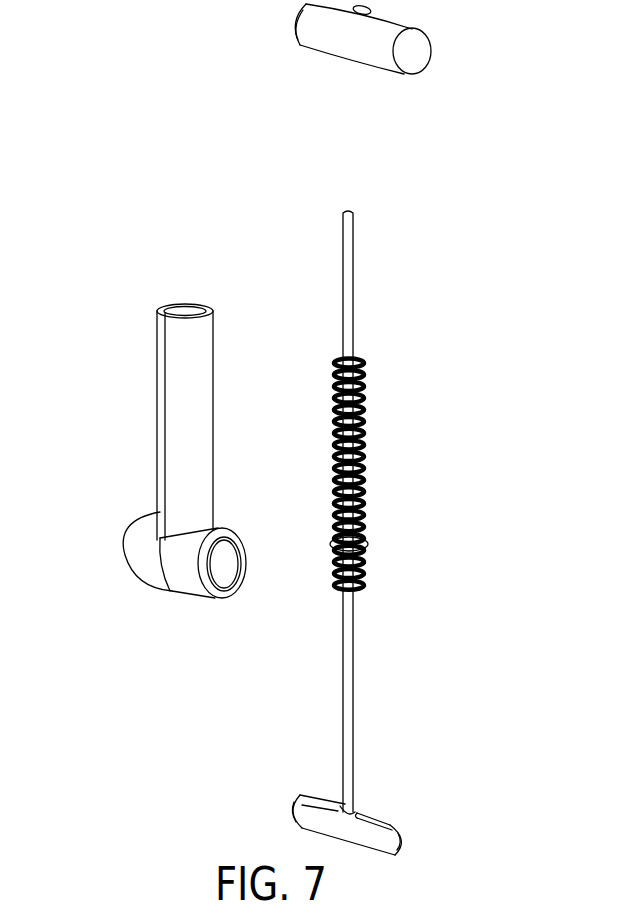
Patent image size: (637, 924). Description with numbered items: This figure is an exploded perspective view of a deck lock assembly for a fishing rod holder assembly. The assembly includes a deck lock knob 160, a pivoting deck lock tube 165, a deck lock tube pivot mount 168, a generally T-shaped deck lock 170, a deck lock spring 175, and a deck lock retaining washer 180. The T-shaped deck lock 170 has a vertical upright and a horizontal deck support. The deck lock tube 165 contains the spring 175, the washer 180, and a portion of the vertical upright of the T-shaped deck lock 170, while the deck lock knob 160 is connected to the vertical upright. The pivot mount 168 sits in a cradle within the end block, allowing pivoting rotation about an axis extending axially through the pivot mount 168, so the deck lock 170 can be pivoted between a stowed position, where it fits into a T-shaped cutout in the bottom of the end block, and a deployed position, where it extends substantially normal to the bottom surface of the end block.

The deck lock knob 160 is at (358, 50).
The pivoting deck lock tube 165 is at (182, 418).
The deck lock tube pivot mount 168 is at (225, 580).
The T-shaped deck lock 170 is at (347, 768).
The deck lock spring 175 is at (367, 447).
The deck lock retaining washer 180 is at (330, 545).